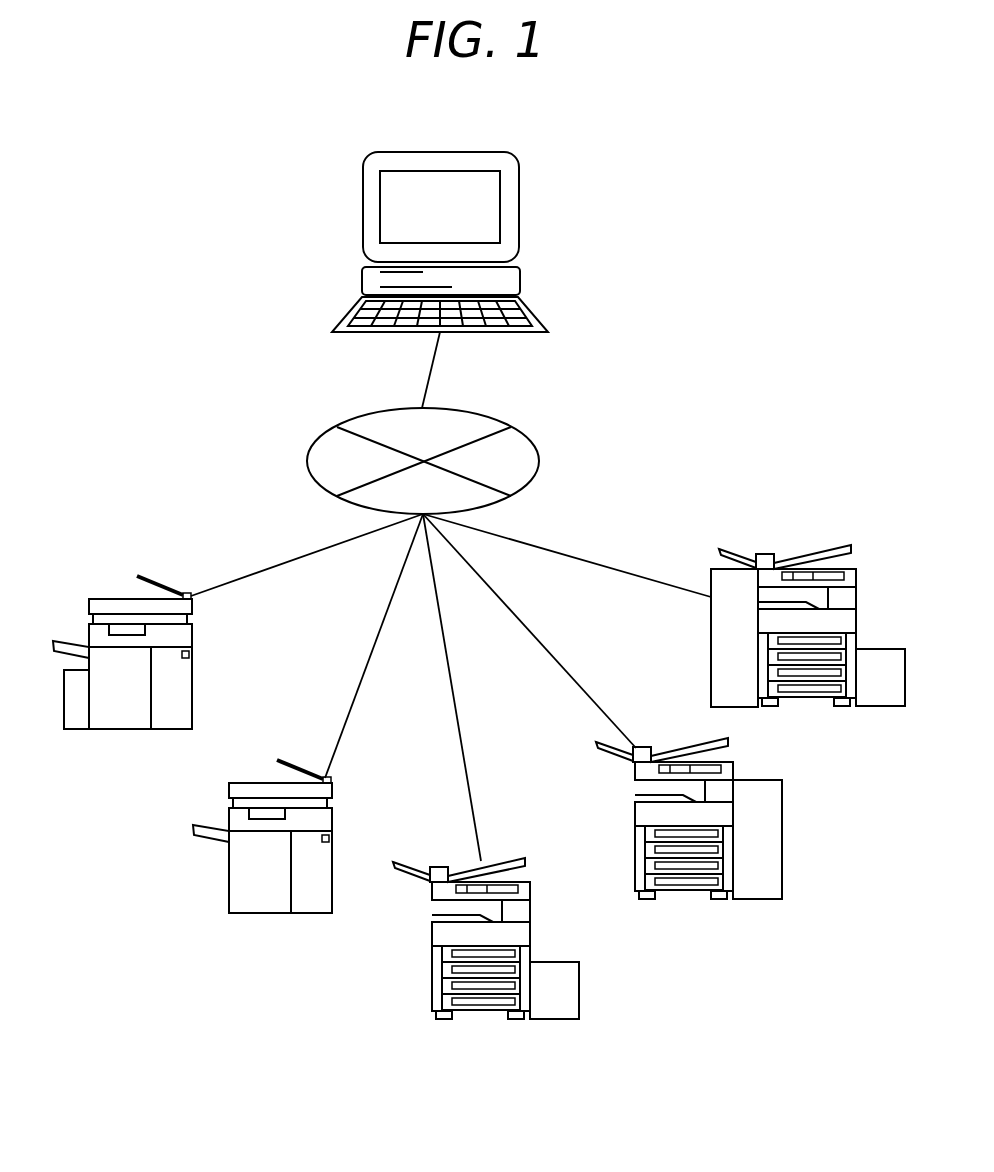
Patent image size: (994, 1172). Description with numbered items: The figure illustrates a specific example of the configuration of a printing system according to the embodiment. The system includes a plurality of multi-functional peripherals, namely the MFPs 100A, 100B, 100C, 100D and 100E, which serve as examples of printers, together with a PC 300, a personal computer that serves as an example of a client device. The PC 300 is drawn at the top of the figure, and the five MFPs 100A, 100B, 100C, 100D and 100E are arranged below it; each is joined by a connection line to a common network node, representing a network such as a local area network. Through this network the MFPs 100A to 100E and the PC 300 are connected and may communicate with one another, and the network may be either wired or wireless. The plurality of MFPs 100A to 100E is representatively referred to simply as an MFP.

The PC 300 is at (478, 152).
The MFP 100A is at (99, 598).
The MFP 100B is at (237, 782).
The MFP 100C is at (440, 867).
The MFP 100D is at (643, 748).
The MFP 100E is at (766, 555).